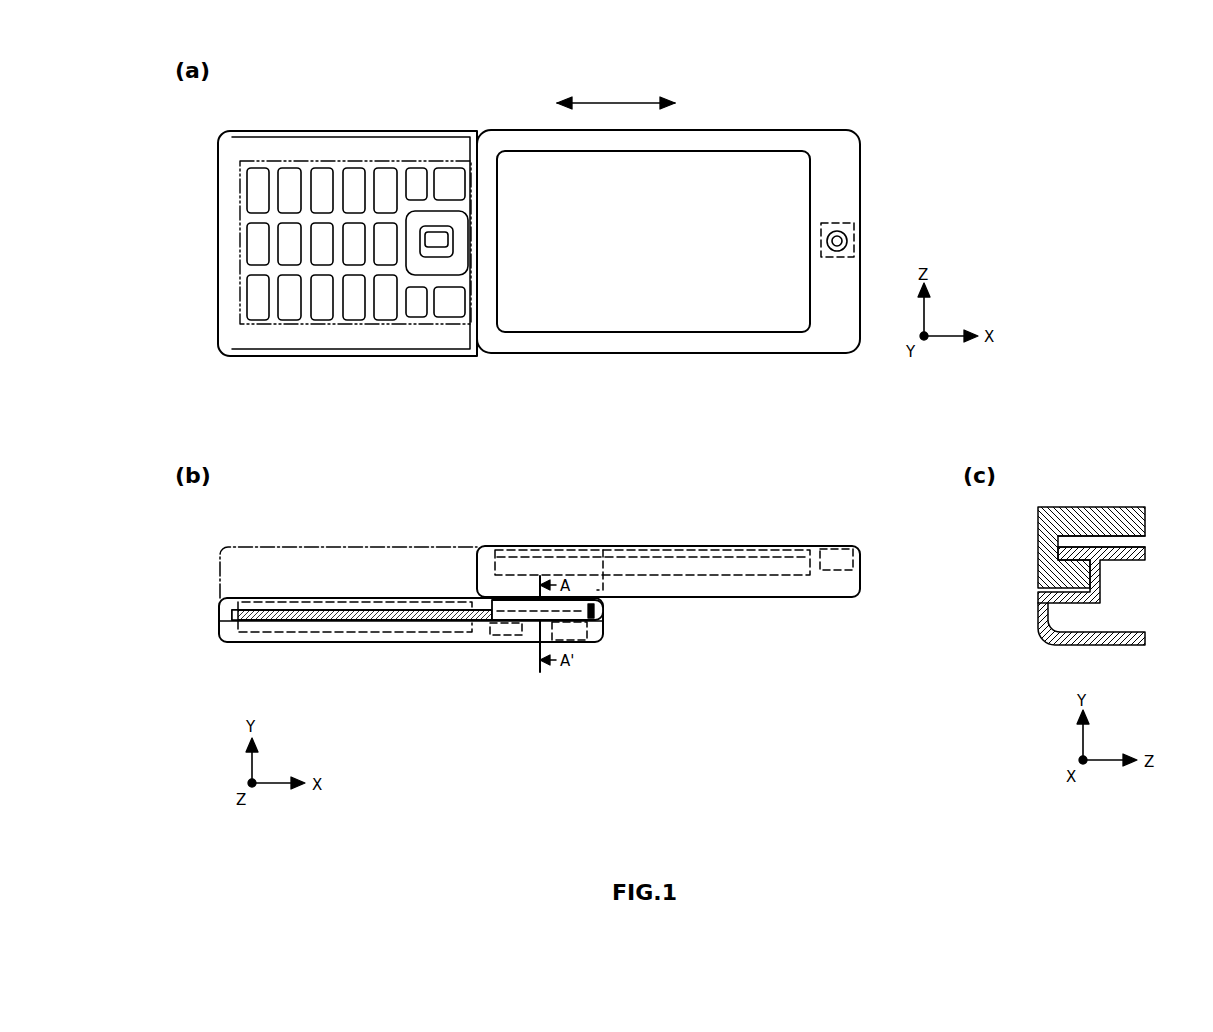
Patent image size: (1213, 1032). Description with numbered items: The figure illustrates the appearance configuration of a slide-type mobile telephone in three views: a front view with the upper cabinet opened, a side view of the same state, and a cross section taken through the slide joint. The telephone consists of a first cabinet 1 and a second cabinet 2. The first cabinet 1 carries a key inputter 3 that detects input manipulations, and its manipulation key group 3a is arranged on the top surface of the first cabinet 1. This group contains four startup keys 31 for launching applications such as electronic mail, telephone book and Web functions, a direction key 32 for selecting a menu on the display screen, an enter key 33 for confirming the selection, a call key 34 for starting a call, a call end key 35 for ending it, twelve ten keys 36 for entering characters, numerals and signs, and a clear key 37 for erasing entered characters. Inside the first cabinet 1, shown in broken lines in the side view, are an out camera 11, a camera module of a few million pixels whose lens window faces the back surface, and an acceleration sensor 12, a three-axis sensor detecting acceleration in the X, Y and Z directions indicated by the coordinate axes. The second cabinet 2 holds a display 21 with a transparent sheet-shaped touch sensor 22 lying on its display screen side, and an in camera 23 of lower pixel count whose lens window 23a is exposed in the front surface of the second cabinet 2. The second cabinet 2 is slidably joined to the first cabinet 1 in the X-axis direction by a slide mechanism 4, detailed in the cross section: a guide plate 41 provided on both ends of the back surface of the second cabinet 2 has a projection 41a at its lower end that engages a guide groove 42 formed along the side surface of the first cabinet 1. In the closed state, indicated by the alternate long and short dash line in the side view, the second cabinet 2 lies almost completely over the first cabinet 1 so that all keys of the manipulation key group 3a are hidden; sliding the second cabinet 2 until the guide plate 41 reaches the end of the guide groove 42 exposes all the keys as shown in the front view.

The first cabinet 1 is at (273, 357).
The second cabinet 2 is at (593, 353).
The key inputter 3 is at (333, 633).
The manipulation key group 3a is at (240, 243).
The slide mechanism 4 is at (600, 612).
The out camera 11 is at (590, 637).
The acceleration sensor 12 is at (503, 637).
The display 21 is at (780, 333).
The touch sensor 22 is at (655, 307).
The in camera 23 is at (842, 222).
The lens window 23a is at (855, 240).
The startup keys 31 is at (413, 183).
The direction key 32 is at (460, 252).
The enter key 33 is at (440, 238).
The call key 34 is at (387, 185).
The call end key 35 is at (388, 295).
The ten keys 36 is at (320, 240).
The clear key 37 is at (382, 243).
The guide plate 41 is at (502, 603).
The projection 41a is at (1083, 553).
The guide groove 42 is at (397, 615).